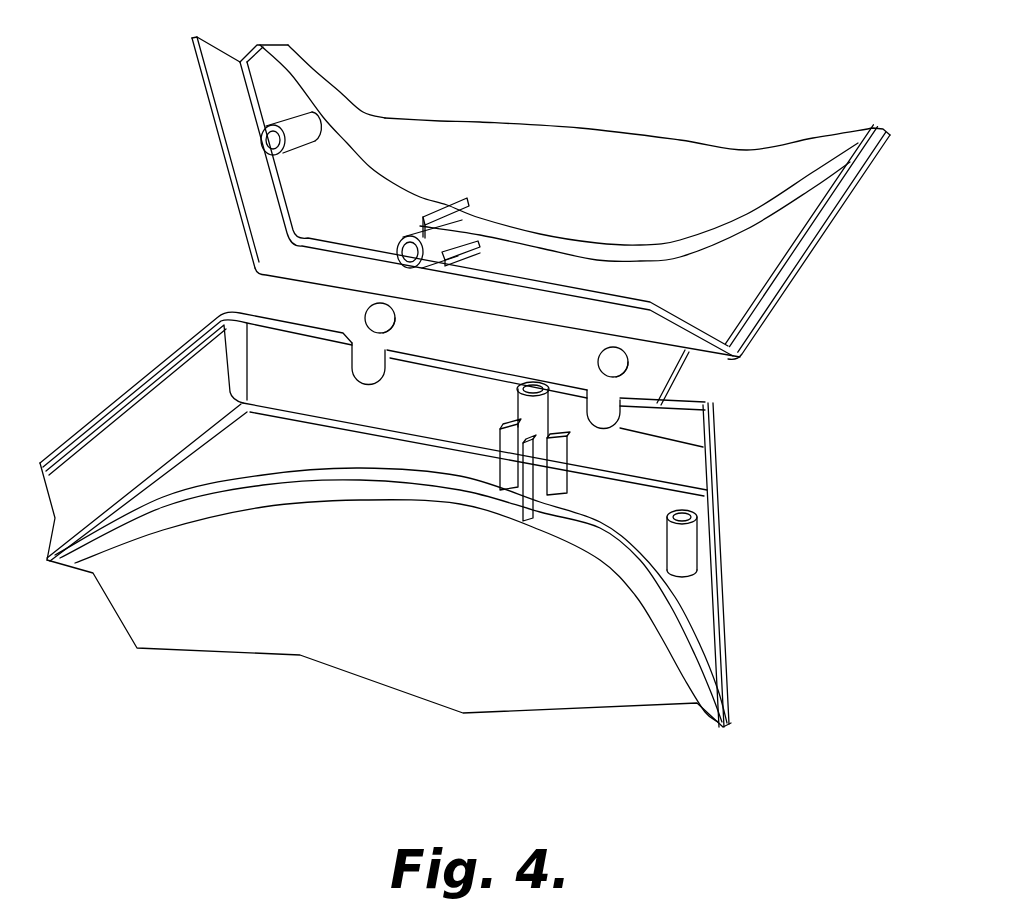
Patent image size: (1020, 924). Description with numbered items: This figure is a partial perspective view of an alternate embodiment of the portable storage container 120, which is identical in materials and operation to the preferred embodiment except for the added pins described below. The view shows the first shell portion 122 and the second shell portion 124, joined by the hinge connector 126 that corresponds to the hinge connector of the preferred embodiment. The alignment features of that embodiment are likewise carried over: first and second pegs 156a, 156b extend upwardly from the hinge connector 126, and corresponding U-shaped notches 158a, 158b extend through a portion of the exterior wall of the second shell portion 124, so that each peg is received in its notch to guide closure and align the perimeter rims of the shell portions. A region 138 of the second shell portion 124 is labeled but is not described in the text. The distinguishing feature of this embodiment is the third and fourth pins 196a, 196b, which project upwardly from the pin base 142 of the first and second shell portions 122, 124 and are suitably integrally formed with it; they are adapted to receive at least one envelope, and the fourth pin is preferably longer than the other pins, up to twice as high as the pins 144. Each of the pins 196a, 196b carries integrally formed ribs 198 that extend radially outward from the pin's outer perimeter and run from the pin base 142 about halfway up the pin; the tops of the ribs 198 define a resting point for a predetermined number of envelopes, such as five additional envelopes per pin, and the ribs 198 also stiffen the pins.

The portable storage container 120 is at (760, 490).
The first shell portion 122 is at (834, 233).
The second shell portion 124 is at (742, 682).
The back wall 126 is at (688, 378).
The curved surface 138 is at (650, 632).
The pin base 142 is at (340, 186).
The pins 144 is at (262, 131).
The locating peg 156a is at (372, 322).
The locating peg 156b is at (613, 368).
The locating slot 158a is at (366, 384).
The locating slot 158b is at (603, 428).
The third pin 196a is at (413, 232).
The fourth pin 196b is at (538, 483).
The ribs 198 is at (462, 241).